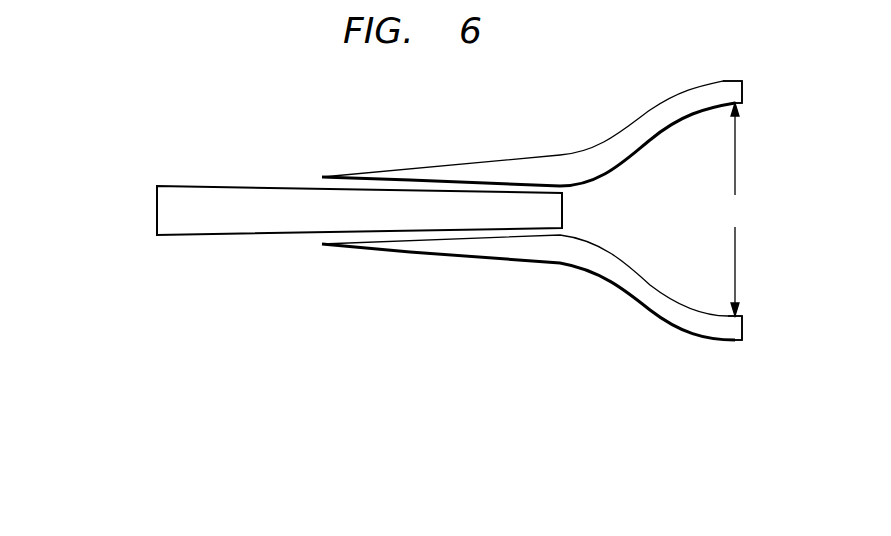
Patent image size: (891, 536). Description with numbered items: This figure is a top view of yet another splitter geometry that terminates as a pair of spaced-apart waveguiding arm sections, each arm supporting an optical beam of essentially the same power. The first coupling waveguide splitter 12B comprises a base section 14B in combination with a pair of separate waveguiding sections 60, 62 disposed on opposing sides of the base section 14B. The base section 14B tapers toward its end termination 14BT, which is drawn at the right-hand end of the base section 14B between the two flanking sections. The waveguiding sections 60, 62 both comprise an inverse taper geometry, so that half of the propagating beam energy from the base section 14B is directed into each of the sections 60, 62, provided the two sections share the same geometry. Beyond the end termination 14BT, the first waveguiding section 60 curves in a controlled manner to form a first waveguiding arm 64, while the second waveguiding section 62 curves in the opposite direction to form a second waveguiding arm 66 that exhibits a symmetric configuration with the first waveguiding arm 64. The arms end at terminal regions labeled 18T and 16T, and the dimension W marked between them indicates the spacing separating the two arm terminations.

The first coupling waveguide splitter 12B is at (455, 292).
The base section 14B is at (223, 186).
The end termination 14BT is at (563, 212).
The first waveguiding section 60 is at (400, 169).
The second waveguiding section 62 is at (397, 249).
The first waveguiding arm 64 is at (722, 83).
The second waveguiding arm 66 is at (716, 334).
The first terminal 18T is at (744, 92).
The second terminal 16T is at (744, 328).
The width between terminals W is at (736, 209).